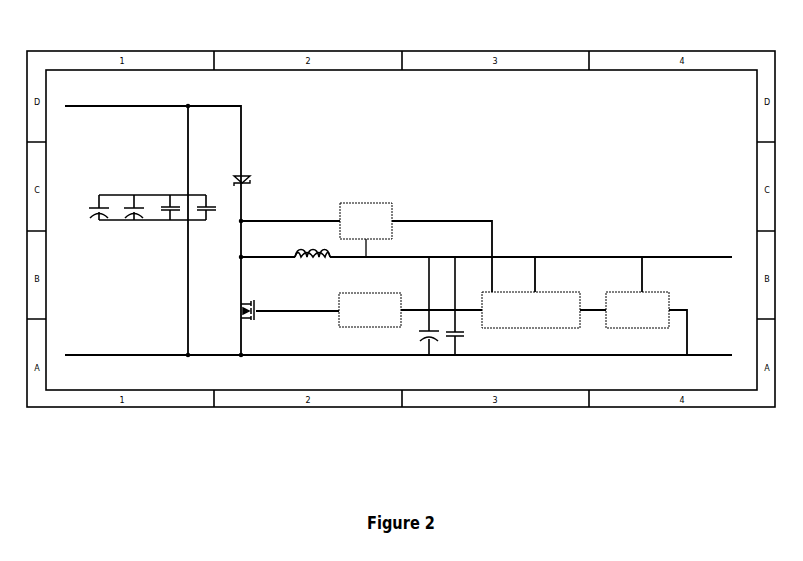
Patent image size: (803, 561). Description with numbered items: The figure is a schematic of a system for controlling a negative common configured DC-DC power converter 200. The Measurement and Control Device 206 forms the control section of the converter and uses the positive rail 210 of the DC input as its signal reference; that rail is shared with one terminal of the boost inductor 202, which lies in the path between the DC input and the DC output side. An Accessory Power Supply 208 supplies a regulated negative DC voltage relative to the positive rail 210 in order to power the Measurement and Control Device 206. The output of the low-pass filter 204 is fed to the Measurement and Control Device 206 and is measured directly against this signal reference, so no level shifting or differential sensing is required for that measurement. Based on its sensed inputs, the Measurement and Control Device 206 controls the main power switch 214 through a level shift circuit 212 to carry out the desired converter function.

The negative common configured DC-DC power converter 200 is at (397, 277).
The boost inductor 202 is at (309, 257).
The low-pass filter 204 is at (360, 203).
The Measurement and Control Device 206 is at (549, 292).
The Accessory Power Supply 208 is at (653, 292).
The positive rail 210 is at (679, 254).
The level shift circuit 212 is at (350, 292).
The main power switch 214 is at (255, 318).